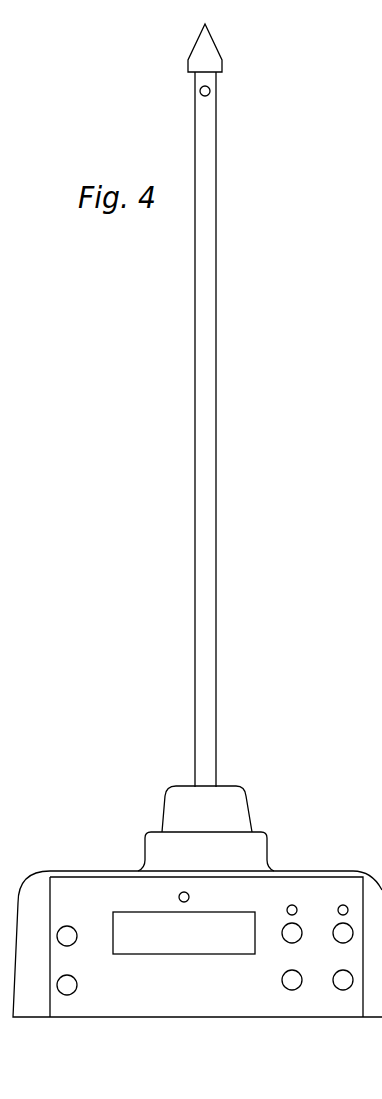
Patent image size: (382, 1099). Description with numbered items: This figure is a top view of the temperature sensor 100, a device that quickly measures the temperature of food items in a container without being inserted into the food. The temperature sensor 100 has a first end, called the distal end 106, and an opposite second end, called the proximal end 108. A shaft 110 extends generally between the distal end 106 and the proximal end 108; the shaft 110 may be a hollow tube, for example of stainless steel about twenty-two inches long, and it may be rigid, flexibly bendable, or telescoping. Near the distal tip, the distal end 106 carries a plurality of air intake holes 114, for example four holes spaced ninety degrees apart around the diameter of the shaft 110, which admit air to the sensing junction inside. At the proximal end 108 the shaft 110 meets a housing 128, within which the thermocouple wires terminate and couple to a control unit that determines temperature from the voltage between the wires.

The temperature sensor 100 is at (257, 236).
The distal end 106 is at (195, 47).
The proximal end 108 is at (88, 1018).
The shaft 110 is at (216, 385).
The air intake holes 114 is at (212, 88).
The housing 128 is at (267, 833).